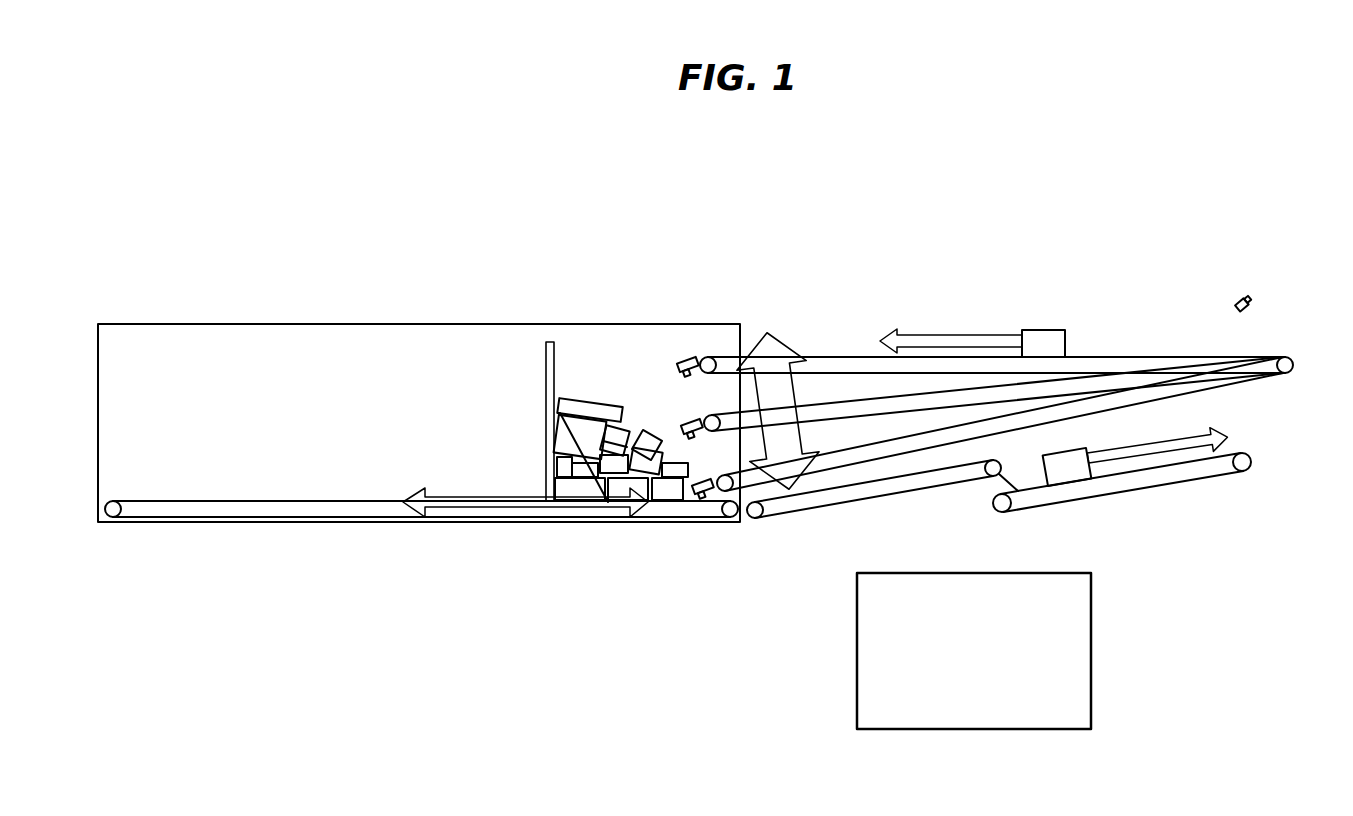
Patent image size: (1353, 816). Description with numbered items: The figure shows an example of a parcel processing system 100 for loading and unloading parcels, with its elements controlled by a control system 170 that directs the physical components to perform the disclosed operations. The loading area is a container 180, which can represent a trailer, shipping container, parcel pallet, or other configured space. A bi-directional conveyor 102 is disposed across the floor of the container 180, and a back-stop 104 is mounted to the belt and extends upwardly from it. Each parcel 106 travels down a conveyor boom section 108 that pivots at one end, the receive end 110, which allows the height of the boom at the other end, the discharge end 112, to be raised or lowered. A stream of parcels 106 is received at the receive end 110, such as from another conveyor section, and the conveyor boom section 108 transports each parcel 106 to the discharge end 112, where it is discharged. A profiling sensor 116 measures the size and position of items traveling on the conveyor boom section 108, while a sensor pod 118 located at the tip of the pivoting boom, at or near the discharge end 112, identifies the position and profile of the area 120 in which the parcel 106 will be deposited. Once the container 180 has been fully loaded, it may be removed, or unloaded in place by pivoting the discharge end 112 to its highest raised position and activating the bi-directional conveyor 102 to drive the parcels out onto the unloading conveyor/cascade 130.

The parcel processing system 100 is at (1245, 152).
The container 180 is at (285, 324).
The bi-directional conveyor 102 is at (275, 502).
The back-stop 104 is at (555, 367).
The area 120 is at (590, 488).
The discharge end 112 is at (703, 364).
The sensor pod 118 is at (689, 420).
The conveyor boom section 108 is at (833, 356).
The parcel 106 is at (1040, 330).
The receive end 110 is at (1293, 358).
The profiling sensor 116 is at (1250, 300).
The unloading conveyor/cascade 130 is at (907, 493).
The control system 170 is at (989, 683).